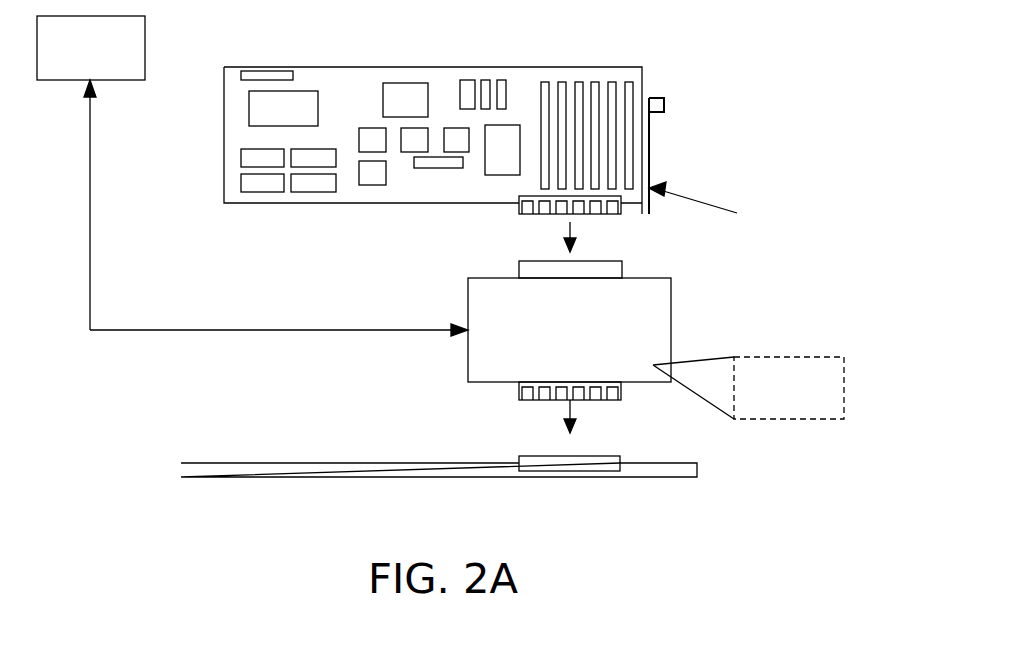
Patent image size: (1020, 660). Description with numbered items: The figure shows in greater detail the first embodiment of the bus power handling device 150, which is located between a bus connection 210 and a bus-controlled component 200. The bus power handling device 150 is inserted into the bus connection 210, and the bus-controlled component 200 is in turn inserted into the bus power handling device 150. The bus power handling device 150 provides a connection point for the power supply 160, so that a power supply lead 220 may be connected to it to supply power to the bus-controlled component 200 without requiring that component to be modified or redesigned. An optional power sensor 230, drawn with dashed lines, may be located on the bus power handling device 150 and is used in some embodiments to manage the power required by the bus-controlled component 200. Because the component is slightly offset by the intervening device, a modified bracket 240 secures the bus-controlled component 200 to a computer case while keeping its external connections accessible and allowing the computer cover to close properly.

The power supply 160 is at (136, 76).
The bus-controlled component 200 is at (640, 75).
The modified bracket 240 is at (647, 160).
The power supply lead 220 is at (268, 331).
The bus power handling device 150 is at (482, 373).
The power sensor 230 is at (755, 417).
The bus connection 210 is at (202, 470).